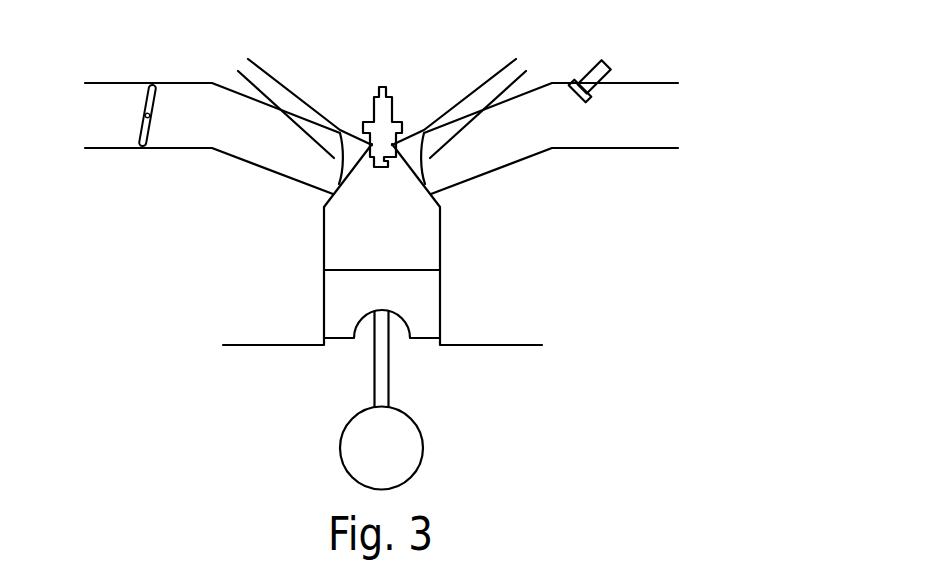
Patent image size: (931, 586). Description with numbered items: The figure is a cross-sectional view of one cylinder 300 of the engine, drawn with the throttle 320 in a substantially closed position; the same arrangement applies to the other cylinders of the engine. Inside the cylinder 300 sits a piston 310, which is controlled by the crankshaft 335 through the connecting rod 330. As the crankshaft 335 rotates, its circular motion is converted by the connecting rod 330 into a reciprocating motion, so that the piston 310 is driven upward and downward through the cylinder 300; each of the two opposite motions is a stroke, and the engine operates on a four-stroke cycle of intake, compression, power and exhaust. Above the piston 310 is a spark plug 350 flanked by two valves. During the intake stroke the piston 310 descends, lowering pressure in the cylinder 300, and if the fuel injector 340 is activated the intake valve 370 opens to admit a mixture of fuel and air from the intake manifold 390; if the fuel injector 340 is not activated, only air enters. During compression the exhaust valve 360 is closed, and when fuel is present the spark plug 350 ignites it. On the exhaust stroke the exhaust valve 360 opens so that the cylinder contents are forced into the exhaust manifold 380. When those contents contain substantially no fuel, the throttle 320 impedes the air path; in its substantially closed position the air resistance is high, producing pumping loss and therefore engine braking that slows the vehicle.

The cylinder 300 is at (442, 217).
The piston 310 is at (338, 303).
The throttle 320 is at (140, 120).
The connecting rod 330 is at (375, 372).
The crankshaft 335 is at (410, 460).
The fuel injector 340 is at (599, 57).
The spark plug 350 is at (382, 84).
The exhaust valve 360 is at (283, 87).
The intake valve 370 is at (502, 69).
The exhaust manifold 380 is at (197, 100).
The intake manifold 390 is at (593, 133).